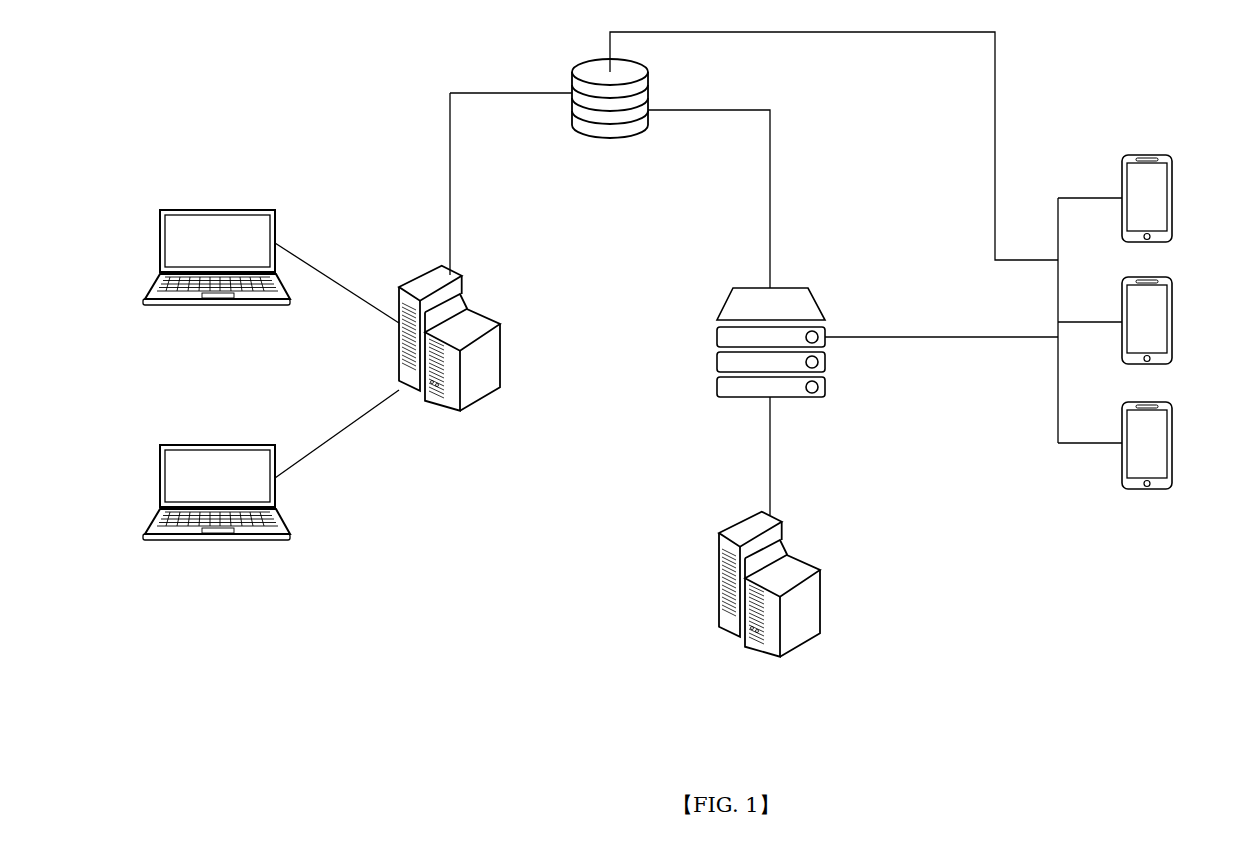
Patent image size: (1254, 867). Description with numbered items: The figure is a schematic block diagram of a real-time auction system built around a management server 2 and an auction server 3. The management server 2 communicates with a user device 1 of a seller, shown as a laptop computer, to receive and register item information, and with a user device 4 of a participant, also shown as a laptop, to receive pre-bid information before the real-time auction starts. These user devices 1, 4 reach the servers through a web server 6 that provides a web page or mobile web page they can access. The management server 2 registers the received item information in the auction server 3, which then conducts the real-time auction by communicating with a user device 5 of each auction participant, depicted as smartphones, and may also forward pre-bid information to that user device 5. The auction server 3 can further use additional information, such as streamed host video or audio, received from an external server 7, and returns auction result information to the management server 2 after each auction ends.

The user device of a seller 1 is at (160, 235).
The management server 2 is at (580, 133).
The auction server 3 is at (723, 302).
The user device of a pre-bidding participant 4 is at (160, 470).
The user device of an auction participant 5 is at (1172, 188).
The web server 6 is at (478, 385).
The external server 7 is at (800, 630).